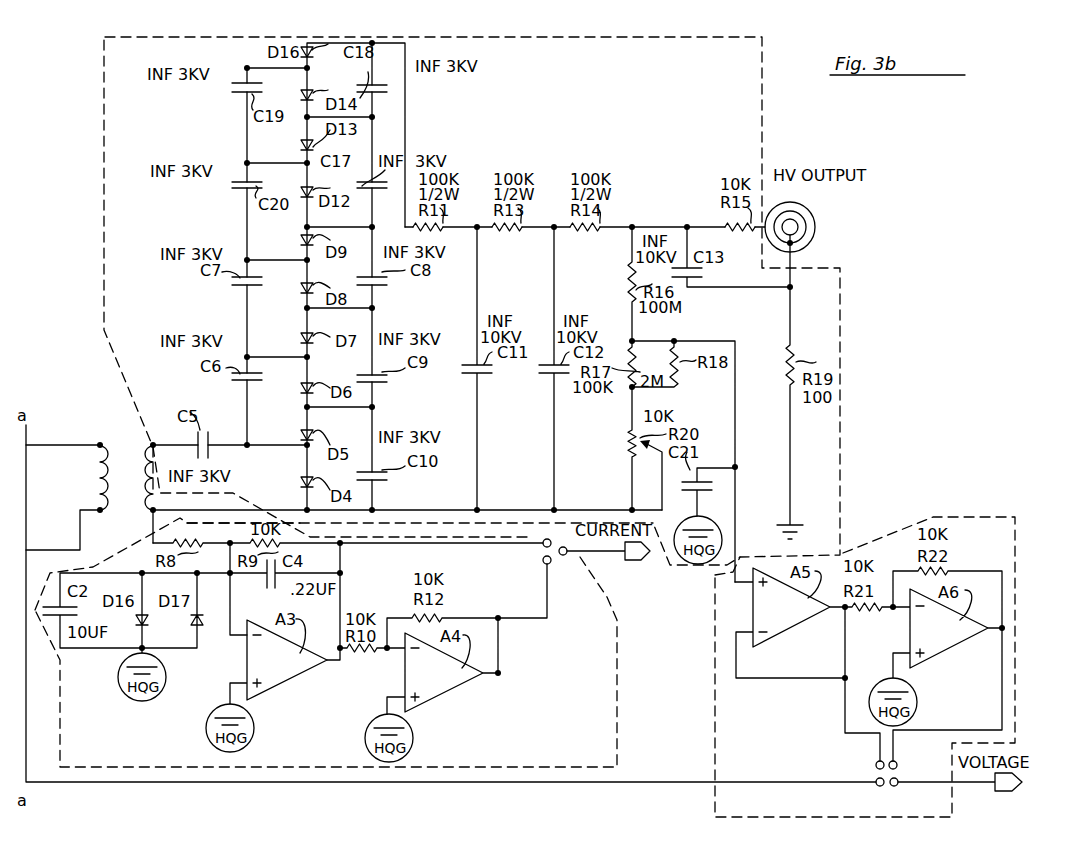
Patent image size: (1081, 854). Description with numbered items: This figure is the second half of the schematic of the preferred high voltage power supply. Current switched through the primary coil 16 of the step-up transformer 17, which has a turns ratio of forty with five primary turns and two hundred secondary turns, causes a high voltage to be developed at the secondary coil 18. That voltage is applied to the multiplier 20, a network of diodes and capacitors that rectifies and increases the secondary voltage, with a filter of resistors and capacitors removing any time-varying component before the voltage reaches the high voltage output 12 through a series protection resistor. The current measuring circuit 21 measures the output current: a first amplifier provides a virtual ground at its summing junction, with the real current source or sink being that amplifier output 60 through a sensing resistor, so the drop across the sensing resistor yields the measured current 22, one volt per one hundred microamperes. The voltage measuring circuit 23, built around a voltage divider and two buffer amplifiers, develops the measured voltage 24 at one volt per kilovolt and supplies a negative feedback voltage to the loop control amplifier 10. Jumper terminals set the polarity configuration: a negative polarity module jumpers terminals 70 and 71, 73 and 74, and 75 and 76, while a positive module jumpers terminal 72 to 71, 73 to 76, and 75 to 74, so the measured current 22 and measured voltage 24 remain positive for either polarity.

The loop control amplifier 10 is at (234, 530).
The high voltage output 12 is at (815, 227).
The primary coil 16 is at (100, 468).
The step-up transformer 17 is at (116, 420).
The secondary coil 18 is at (137, 511).
The multiplier 20 is at (104, 68).
The current measuring circuit 21 is at (620, 748).
The measured current 22 is at (613, 554).
The voltage measuring circuit 23 is at (713, 790).
The measured voltage 24 is at (975, 786).
The output of amplifier A3 60 is at (331, 664).
The terminal 70 is at (550, 564).
The terminal 71 is at (566, 555).
The terminal 72 is at (544, 547).
The terminal 73 is at (876, 763).
The terminal 74 is at (877, 786).
The terminal 75 is at (898, 765).
The terminal 76 is at (897, 787).